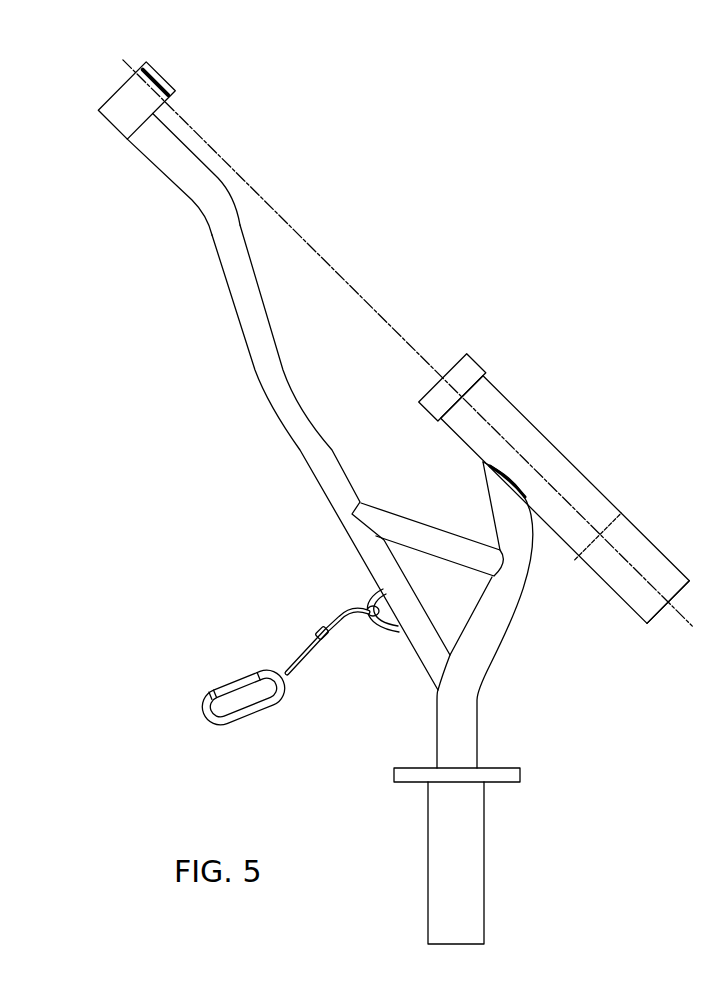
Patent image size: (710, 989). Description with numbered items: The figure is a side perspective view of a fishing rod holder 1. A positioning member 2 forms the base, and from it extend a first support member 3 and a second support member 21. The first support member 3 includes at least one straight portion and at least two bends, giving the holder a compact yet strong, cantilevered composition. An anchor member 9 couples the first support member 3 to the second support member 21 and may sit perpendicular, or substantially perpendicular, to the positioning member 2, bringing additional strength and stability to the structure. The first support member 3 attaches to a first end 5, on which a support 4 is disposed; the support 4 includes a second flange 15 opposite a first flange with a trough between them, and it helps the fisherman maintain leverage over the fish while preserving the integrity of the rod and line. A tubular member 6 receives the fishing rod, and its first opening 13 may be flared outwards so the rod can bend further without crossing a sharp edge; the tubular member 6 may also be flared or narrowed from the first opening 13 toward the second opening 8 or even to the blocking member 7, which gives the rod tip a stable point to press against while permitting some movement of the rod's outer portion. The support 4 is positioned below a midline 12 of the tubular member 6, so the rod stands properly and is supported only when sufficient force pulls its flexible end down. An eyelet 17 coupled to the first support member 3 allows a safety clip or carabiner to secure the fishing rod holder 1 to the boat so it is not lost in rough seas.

The fishing rod holder 1 is at (389, 491).
The positioning member 2 is at (486, 841).
The first support member 3 is at (328, 503).
The support 4 is at (100, 80).
The first end 5 is at (163, 167).
The tubular member 6 is at (540, 434).
The blocking member 7 is at (667, 535).
The second opening 8 is at (577, 559).
The anchor member 9 is at (425, 521).
The midline 12 is at (358, 287).
The first opening 13 is at (458, 357).
The second flange 15 is at (158, 74).
The eyelet 17 is at (381, 632).
The second support member 21 is at (511, 633).